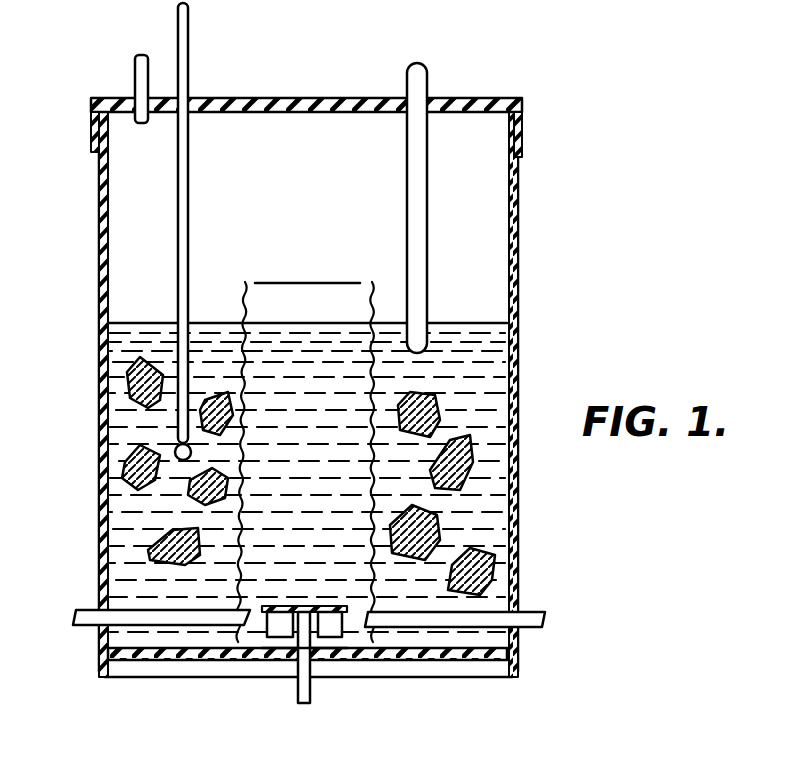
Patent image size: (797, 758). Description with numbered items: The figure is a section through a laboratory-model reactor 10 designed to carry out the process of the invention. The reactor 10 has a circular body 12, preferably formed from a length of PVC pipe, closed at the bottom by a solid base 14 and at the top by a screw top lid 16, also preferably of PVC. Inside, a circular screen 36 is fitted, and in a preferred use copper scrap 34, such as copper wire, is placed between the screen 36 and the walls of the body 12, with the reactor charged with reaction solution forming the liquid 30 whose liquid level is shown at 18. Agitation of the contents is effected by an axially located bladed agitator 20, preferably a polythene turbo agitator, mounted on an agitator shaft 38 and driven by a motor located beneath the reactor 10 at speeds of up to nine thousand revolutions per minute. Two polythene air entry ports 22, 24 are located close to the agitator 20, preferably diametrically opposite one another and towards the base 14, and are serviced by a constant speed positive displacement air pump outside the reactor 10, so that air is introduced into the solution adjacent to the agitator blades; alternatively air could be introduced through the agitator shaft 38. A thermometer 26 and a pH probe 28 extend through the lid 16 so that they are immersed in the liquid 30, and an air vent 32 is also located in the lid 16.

The reactor 10 is at (329, 369).
The circular body 12 is at (100, 510).
The solid base 14 is at (428, 655).
The screw top lid 16 is at (520, 97).
The liquid level 18 is at (130, 320).
The agitator 20 is at (328, 627).
The air entry port 22 is at (85, 610).
The air entry port 24 is at (530, 607).
The thermometer 26 is at (189, 44).
The pH probe 28 is at (428, 75).
The liquid 30 is at (478, 377).
The air vent 32 is at (136, 72).
The copper scrap 34 is at (140, 388).
The circular screen 36 is at (372, 305).
The agitator shaft 38 is at (307, 642).